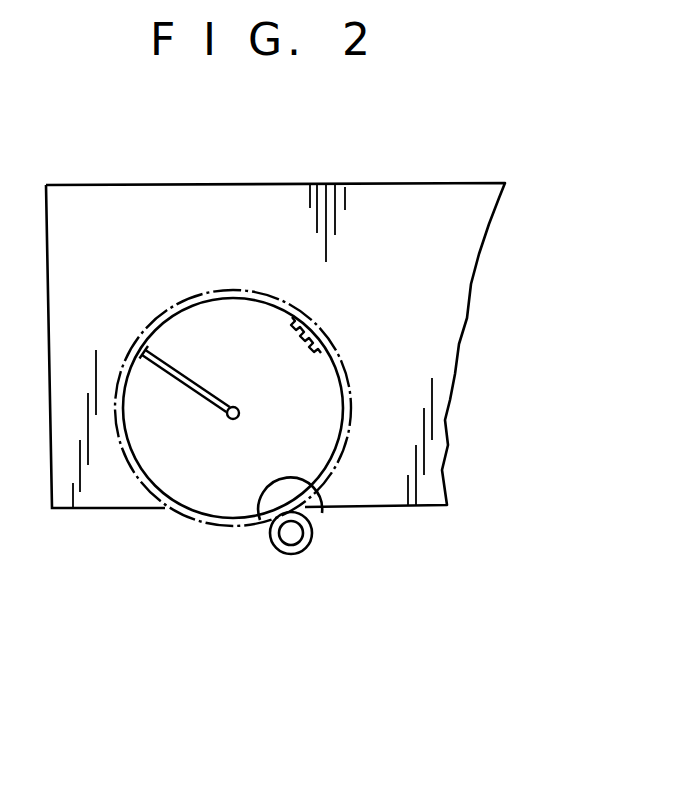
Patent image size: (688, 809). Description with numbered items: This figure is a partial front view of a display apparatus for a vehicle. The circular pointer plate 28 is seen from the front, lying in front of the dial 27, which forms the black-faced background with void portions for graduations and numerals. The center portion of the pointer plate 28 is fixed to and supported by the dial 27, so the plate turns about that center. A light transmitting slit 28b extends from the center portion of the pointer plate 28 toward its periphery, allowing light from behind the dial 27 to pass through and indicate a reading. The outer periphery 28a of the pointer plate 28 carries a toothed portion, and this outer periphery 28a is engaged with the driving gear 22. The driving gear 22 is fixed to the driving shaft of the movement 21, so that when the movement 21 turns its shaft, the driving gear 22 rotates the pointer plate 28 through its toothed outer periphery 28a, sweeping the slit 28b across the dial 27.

The movement 21 is at (308, 558).
The driving gear 22 is at (312, 535).
The dial 27 is at (365, 200).
The pointer plate 28 is at (242, 320).
The outer periphery 28a is at (335, 347).
The light transmitting slit 28b is at (195, 397).